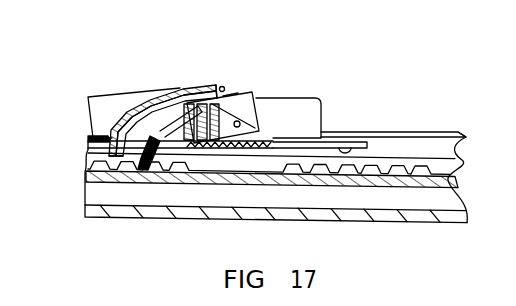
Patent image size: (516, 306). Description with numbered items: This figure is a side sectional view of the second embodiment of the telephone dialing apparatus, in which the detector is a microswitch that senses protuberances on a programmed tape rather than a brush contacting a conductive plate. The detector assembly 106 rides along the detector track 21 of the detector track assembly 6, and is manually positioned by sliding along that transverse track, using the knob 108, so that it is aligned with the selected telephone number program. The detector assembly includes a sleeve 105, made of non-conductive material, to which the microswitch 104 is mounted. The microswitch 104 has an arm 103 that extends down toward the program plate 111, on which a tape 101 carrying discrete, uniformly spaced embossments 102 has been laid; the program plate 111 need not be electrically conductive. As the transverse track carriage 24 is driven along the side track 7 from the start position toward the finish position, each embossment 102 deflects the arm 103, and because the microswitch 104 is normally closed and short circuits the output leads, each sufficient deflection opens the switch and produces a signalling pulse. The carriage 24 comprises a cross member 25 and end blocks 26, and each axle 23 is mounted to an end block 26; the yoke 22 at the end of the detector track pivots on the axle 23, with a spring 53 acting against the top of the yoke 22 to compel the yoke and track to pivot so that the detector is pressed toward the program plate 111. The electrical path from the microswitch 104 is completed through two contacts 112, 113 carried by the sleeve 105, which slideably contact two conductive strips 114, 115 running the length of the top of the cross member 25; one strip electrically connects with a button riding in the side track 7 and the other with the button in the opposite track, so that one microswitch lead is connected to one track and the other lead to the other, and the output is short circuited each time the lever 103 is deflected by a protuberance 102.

The detector track assembly 6 is at (239, 89).
The side track 7 is at (447, 133).
The detector track 21 is at (128, 113).
The yoke 22 is at (260, 117).
The axle 23 is at (255, 100).
The transverse track carriage 24 is at (330, 118).
The cross member 25 is at (262, 140).
The end block 26 is at (311, 97).
The spring 53 is at (224, 87).
The tape 101 is at (462, 158).
The embossment 102 is at (398, 170).
The arm 103 is at (158, 170).
The microswitch 104 is at (194, 100).
The sleeve 105 is at (148, 101).
The detector assembly 106 is at (78, 110).
The knob 108 is at (98, 96).
The program plate 111 is at (298, 186).
The contact 112 is at (199, 94).
The contact 113 is at (253, 93).
The conductive strip 114 is at (203, 150).
The conductive strip 115 is at (229, 142).